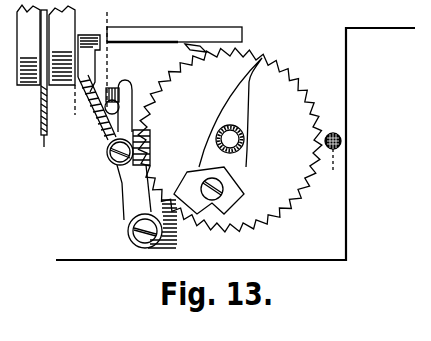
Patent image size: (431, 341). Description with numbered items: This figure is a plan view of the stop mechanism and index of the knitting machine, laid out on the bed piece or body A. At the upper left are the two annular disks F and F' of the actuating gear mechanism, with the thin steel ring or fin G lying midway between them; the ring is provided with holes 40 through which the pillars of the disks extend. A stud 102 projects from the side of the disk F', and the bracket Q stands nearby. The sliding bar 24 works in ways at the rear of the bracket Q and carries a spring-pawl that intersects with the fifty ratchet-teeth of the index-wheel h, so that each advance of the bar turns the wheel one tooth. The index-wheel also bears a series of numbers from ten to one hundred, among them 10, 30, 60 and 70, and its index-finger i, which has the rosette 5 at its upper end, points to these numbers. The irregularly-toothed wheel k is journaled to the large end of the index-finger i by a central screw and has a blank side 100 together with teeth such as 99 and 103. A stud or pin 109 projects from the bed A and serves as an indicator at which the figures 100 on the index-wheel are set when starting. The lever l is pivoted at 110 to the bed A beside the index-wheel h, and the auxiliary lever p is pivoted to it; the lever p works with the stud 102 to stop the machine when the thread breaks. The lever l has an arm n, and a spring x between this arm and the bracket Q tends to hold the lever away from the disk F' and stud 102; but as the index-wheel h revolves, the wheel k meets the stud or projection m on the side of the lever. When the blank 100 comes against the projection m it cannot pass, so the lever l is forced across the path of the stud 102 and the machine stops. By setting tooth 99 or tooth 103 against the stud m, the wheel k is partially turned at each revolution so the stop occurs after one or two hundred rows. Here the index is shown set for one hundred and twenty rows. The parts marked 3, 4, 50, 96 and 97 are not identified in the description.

The sliding bar 24 is at (174, 34).
The pawl tip 4 is at (193, 49).
The ratchet wheel 30 is at (230, 140).
The holes 40 is at (168, 87).
The tooth 3 is at (267, 70).
The wheel 10 is at (292, 92).
The rosette 5 is at (230, 139).
The index-finger i is at (230, 112).
The index-wheel h is at (194, 115).
The irregularly-toothed wheel k is at (209, 190).
The blank side 100 is at (187, 175).
The lug 96 is at (232, 168).
The lug 97 is at (244, 194).
The tooth 60 is at (173, 191).
The tooth 70 is at (234, 211).
The lever l is at (124, 186).
The pivot 110 is at (128, 234).
The tooth 99 is at (184, 241).
The tooth 103 is at (216, 247).
The auxiliary lever p is at (104, 136).
The stud or projection m is at (141, 147).
The pin 50 is at (157, 138).
The arm n is at (125, 98).
The spring x is at (112, 101).
The bracket Q is at (98, 16).
The stud 102 is at (70, 120).
The annular disk F is at (28, 45).
The annular disk F' is at (62, 45).
The thin steel ring or fin G is at (44, 86).
The stud or pin 109 is at (333, 168).
The bed piece or body A is at (310, 239).